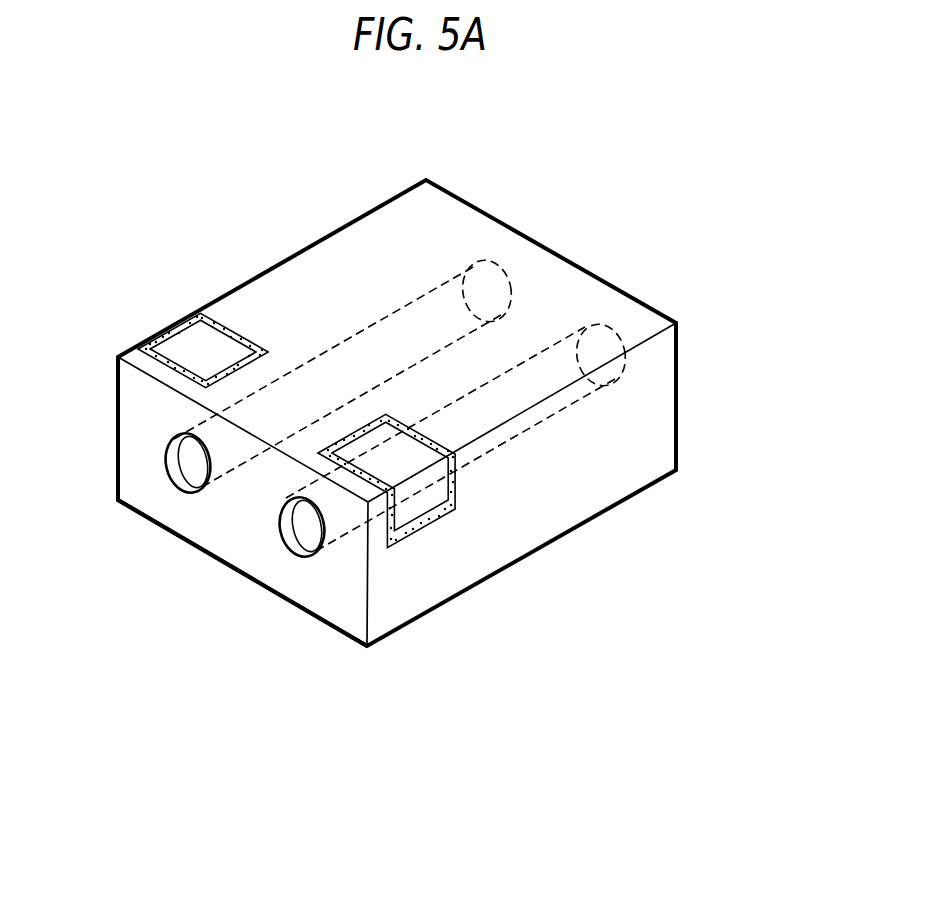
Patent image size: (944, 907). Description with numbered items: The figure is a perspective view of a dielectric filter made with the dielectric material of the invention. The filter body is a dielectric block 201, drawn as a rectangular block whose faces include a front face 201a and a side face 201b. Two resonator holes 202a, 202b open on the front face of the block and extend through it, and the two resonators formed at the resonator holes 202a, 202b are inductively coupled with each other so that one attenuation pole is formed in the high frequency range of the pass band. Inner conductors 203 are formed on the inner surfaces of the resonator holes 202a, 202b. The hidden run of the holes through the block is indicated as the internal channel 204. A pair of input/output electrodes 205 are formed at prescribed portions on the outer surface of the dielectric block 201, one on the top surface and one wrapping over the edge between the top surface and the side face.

The dielectric block 201 is at (468, 192).
The front side face of block 201a is at (345, 618).
The right side face of block 201b is at (688, 425).
The resonator hole 202a is at (152, 457).
The resonator hole 202b is at (274, 547).
The inner conductor 203 is at (195, 462).
The internal flow channel 204 is at (610, 318).
The input/output electrode 205 is at (197, 343).